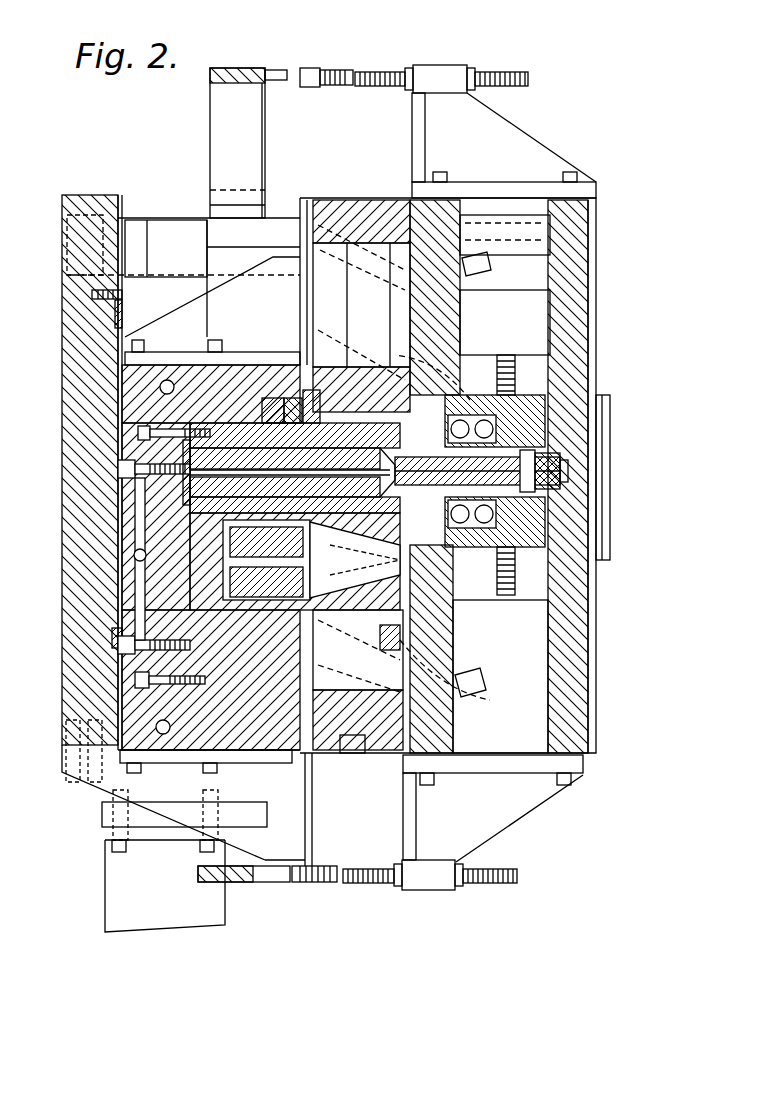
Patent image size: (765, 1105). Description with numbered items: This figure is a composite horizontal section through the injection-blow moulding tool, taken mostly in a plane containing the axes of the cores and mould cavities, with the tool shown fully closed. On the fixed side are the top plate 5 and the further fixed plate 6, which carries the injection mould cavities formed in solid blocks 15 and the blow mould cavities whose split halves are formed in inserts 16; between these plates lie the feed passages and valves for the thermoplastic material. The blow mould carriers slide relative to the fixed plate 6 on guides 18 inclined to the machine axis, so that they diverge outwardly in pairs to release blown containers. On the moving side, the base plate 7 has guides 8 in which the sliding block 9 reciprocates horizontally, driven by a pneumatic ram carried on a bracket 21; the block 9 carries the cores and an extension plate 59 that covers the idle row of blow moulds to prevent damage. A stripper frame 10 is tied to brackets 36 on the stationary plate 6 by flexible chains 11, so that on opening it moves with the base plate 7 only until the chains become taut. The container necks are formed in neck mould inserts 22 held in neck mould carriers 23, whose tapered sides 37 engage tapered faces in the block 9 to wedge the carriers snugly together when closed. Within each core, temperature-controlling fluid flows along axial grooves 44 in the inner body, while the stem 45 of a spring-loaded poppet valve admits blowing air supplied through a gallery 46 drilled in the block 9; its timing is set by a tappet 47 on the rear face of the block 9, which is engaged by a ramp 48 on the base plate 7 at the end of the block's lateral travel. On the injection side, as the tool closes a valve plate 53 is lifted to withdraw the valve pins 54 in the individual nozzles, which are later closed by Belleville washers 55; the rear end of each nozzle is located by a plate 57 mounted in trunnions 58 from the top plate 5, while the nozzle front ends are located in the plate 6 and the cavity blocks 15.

The top plate 5 is at (580, 648).
The fixed plate 6 is at (427, 685).
The moving base plate 7 is at (100, 206).
The guides 8 is at (152, 237).
The sliding block 9 is at (173, 737).
The stripper frame 10 is at (222, 100).
The flexible chains 11 is at (322, 88).
The solid blocks 15 is at (478, 368).
The inserts 16 is at (350, 752).
The guides 18 is at (448, 380).
The bracket 21 is at (112, 790).
The neck mould inserts 22 is at (280, 407).
The neck mould carriers 23 is at (293, 407).
The brackets 36 is at (517, 147).
The sides 37 is at (228, 585).
The grooves 44 is at (313, 405).
The stem 45 is at (140, 685).
The gallery 46 is at (140, 522).
The tappet 47 is at (118, 470).
The ramp 48 is at (123, 313).
The valve plate 53 is at (540, 530).
The valve pins 54 is at (540, 443).
The Belleville washers 55 is at (540, 465).
The plate 57 is at (540, 512).
The trunnions 58 is at (528, 353).
The extension plate 59 is at (315, 245).